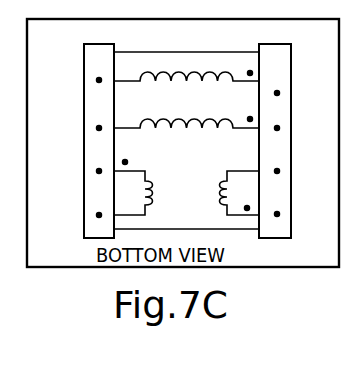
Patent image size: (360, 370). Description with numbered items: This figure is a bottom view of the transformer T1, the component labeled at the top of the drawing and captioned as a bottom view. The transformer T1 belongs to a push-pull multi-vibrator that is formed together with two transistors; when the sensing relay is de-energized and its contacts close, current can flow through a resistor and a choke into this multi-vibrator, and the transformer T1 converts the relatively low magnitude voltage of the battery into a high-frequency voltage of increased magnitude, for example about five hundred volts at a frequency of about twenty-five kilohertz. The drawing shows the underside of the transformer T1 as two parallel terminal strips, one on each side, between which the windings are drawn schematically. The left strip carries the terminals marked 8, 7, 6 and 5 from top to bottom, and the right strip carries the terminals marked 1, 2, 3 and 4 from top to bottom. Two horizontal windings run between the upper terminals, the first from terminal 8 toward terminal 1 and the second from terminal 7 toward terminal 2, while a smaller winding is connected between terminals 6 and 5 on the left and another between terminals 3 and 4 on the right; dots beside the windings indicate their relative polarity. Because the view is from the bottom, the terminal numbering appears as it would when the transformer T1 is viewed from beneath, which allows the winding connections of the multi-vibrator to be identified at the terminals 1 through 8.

The transformer T1 is at (187, 133).
The terminal pin 1 is at (297, 80).
The terminal pin 2 is at (297, 128).
The terminal pin 3 is at (297, 171).
The terminal pin 4 is at (297, 214).
The terminal pin 5 is at (72, 215).
The terminal pin 6 is at (72, 171).
The terminal pin 7 is at (72, 128).
The terminal pin 8 is at (72, 80).